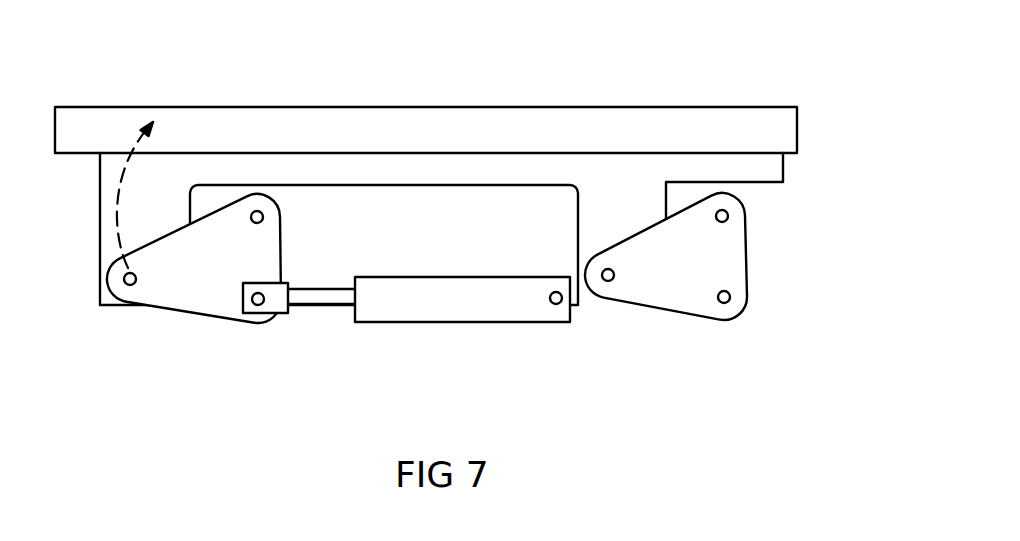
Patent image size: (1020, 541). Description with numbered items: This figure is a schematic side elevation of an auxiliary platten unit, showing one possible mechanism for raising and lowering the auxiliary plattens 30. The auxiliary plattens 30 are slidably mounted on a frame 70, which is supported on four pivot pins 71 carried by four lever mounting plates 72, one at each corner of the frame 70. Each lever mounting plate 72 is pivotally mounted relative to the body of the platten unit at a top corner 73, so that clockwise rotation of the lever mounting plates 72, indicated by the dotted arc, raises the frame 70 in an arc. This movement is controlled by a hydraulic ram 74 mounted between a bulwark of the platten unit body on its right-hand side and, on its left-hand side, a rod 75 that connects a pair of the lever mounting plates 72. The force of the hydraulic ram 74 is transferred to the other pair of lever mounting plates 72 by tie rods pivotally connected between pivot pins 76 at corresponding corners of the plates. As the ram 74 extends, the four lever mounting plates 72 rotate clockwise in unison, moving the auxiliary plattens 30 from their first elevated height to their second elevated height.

The auxiliary platten 30 is at (298, 133).
The frame 70 is at (630, 183).
The pivot pin 71 is at (130, 285).
The lever mounting plate 72 is at (260, 266).
The top corner 73 is at (263, 216).
The hydraulic ram 74 is at (450, 300).
The rod 75 is at (284, 310).
The pivot pin 76 is at (258, 305).